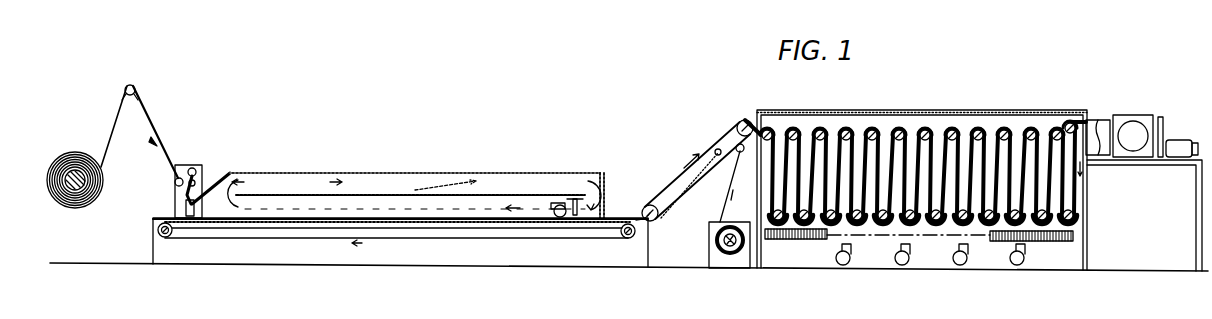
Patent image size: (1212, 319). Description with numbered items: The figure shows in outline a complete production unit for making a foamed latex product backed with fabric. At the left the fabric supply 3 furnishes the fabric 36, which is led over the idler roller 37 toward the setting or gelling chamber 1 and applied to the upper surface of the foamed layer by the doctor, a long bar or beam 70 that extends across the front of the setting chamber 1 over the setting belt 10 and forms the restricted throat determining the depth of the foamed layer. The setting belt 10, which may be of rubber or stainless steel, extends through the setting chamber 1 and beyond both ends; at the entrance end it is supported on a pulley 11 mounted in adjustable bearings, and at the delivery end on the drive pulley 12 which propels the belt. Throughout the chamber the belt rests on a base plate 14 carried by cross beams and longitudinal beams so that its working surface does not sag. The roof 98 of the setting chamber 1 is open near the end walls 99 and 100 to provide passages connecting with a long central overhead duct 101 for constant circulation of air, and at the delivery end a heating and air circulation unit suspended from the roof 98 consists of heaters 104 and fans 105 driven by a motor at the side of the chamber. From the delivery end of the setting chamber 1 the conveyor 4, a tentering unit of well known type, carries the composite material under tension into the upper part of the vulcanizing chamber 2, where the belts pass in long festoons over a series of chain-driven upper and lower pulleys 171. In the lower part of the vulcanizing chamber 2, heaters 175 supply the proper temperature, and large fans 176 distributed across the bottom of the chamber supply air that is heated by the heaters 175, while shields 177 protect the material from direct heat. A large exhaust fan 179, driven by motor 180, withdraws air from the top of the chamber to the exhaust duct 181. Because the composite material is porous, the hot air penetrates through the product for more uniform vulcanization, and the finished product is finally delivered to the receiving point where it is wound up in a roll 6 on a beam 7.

The setting chamber 1 is at (285, 169).
The vulcanizing chamber 2 is at (880, 110).
The fabric supply 3 is at (101, 186).
The conveyor 4 is at (671, 198).
The roll 6 is at (713, 239).
The beam 7 is at (716, 249).
The setting belt 10 is at (226, 240).
The pulley 11 is at (167, 234).
The drive pulley 12 is at (624, 238).
The base plate 14 is at (452, 234).
The fabric 36 is at (150, 124).
The idler roller 37 is at (127, 96).
The bar or beam 70 is at (195, 209).
The roof 98 is at (521, 175).
The end wall 99 is at (213, 185).
The end wall 100 is at (605, 197).
The overhead duct 101 is at (405, 175).
The heaters 104 is at (576, 217).
The fans 105 is at (562, 218).
The upper and lower pulleys 171 is at (1007, 132).
The heaters 175 is at (813, 241).
The fans 176 is at (894, 259).
The shields 177 is at (758, 218).
The exhaust fan 179 is at (1153, 118).
The motor 180 is at (1171, 143).
The exhaust duct 181 is at (1133, 152).